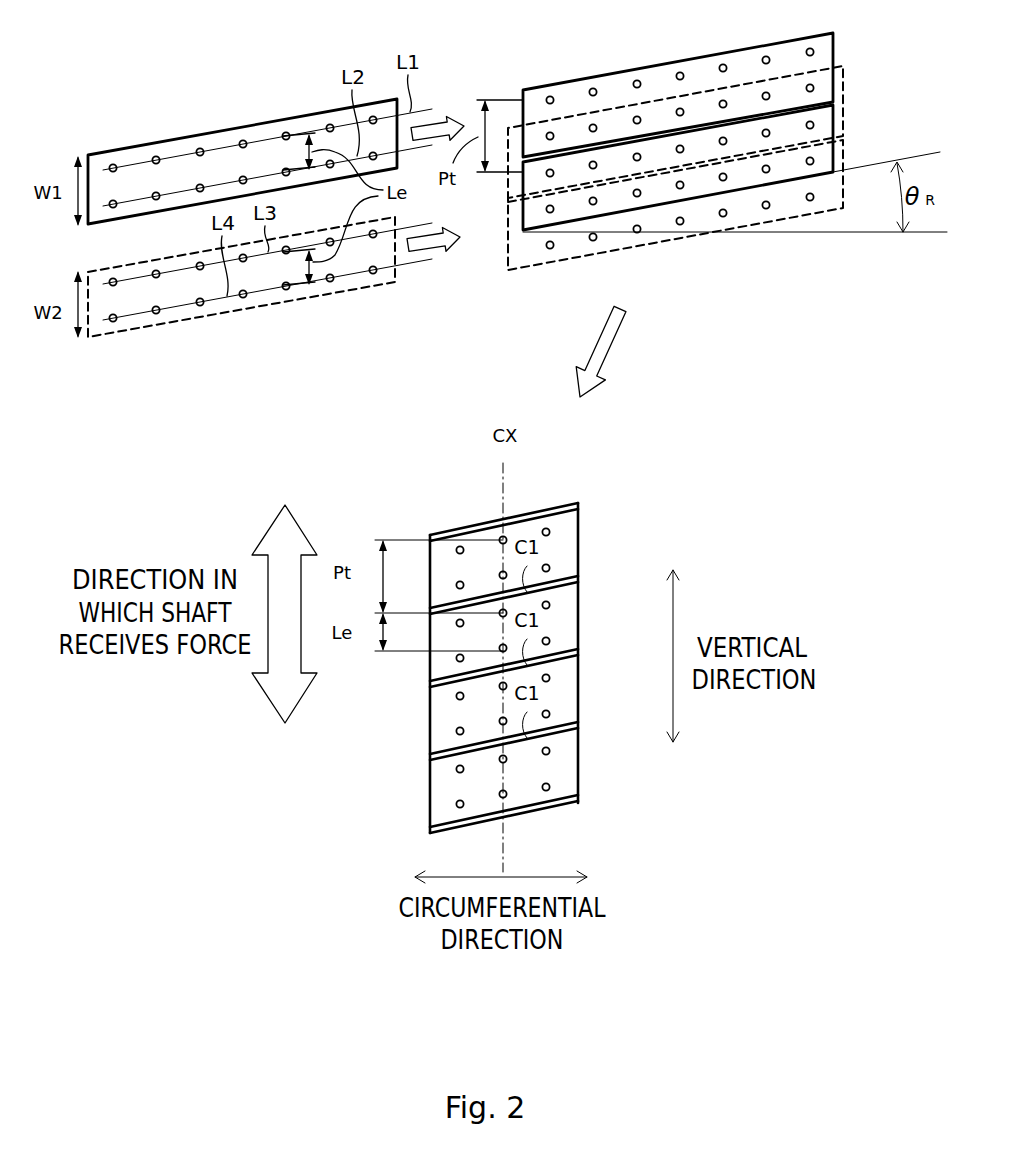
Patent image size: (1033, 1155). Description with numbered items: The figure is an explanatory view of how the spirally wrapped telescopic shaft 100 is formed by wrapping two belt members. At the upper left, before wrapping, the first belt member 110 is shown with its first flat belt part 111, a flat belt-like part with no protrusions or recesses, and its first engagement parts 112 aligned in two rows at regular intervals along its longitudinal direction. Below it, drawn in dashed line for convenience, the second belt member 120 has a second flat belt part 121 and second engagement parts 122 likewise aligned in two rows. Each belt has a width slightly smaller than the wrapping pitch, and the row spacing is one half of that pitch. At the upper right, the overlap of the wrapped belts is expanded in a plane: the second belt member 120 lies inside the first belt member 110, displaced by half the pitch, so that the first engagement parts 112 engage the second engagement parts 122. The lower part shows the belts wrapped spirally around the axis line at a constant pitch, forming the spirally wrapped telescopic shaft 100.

The spirally wrapped telescopic shaft 100 is at (717, 547).
The first belt member 110 is at (291, 72).
The first flat belt part 111 is at (267, 139).
The first engagement parts 112 is at (156, 196).
The second belt member 120 is at (289, 358).
The second flat belt part 121 is at (270, 285).
The second engagement parts 122 is at (156, 274).